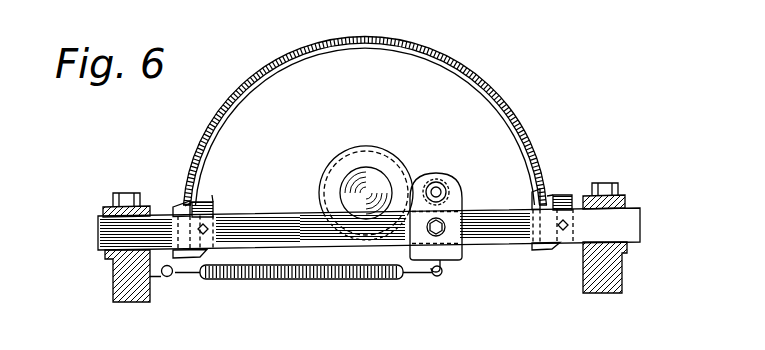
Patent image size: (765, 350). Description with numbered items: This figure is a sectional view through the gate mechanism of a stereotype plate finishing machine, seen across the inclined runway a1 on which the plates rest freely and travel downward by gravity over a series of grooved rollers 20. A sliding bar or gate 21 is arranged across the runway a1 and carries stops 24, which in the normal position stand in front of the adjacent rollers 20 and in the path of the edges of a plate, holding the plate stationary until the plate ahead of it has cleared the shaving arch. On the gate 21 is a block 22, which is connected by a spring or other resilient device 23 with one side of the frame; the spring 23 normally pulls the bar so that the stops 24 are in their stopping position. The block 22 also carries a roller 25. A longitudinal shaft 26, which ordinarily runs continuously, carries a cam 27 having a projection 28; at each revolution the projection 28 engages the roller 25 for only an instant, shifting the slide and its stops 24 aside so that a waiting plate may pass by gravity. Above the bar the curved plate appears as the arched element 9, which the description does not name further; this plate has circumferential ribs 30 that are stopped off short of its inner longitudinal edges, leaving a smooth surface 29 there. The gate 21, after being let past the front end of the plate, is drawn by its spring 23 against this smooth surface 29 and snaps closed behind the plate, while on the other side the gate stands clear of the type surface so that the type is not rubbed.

The hoop 9 is at (472, 58).
The circumferential ribs 30 is at (264, 74).
The sliding bar or gate 21 is at (620, 228).
The inclined body or runway a1 is at (125, 288).
The stops 24 is at (214, 204).
The rollers 20 is at (177, 206).
The smooth surface 29 is at (196, 203).
The cam 27 is at (353, 150).
The longitudinal shaft 26 is at (372, 183).
The projection 28 is at (418, 177).
The roller 25 is at (462, 183).
The block 22 is at (457, 257).
The spring or other resilient device 23 is at (358, 278).